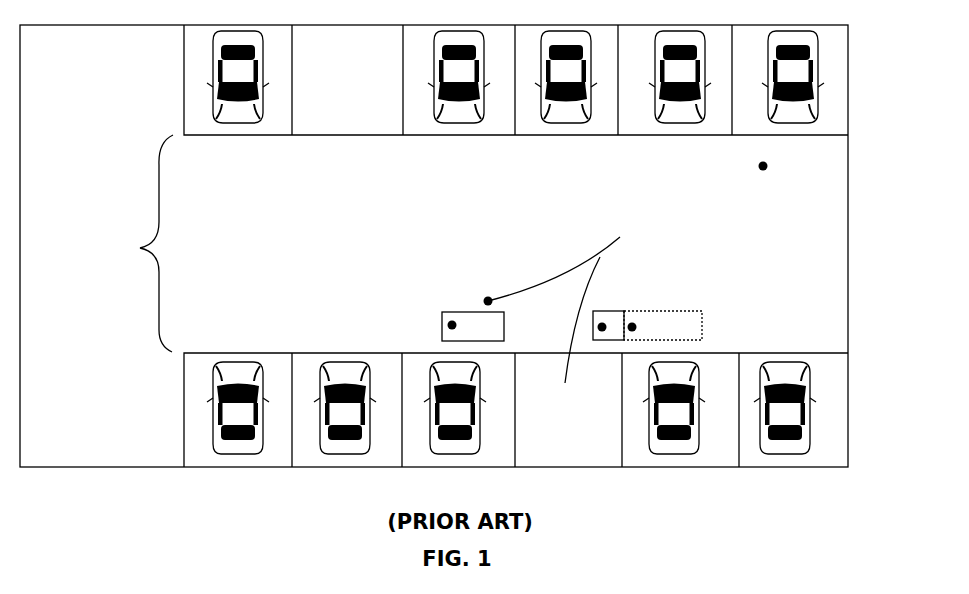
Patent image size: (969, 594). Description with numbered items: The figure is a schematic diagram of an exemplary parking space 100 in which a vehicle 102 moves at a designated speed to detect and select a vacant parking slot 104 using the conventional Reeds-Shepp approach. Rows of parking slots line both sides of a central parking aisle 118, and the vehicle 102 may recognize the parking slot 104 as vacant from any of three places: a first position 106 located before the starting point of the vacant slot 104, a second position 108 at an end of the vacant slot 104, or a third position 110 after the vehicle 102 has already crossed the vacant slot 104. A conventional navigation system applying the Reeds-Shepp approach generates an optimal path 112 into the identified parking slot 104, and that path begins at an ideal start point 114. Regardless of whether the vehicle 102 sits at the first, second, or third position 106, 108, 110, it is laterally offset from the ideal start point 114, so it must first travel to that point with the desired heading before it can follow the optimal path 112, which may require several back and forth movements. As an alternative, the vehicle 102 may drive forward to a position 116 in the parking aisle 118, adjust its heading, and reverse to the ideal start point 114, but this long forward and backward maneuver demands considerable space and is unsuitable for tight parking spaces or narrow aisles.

The parking space 100 is at (848, 210).
The vehicle 102 is at (442, 316).
The vacant parking slot 104 is at (582, 468).
The first position 106 is at (449, 320).
The second position 108 is at (602, 324).
The third position 110 is at (634, 323).
The optimal path 112 is at (574, 276).
The ideal start point 114 is at (488, 297).
The position in parking aisle 116 is at (768, 166).
The parking aisle 118 is at (136, 243).